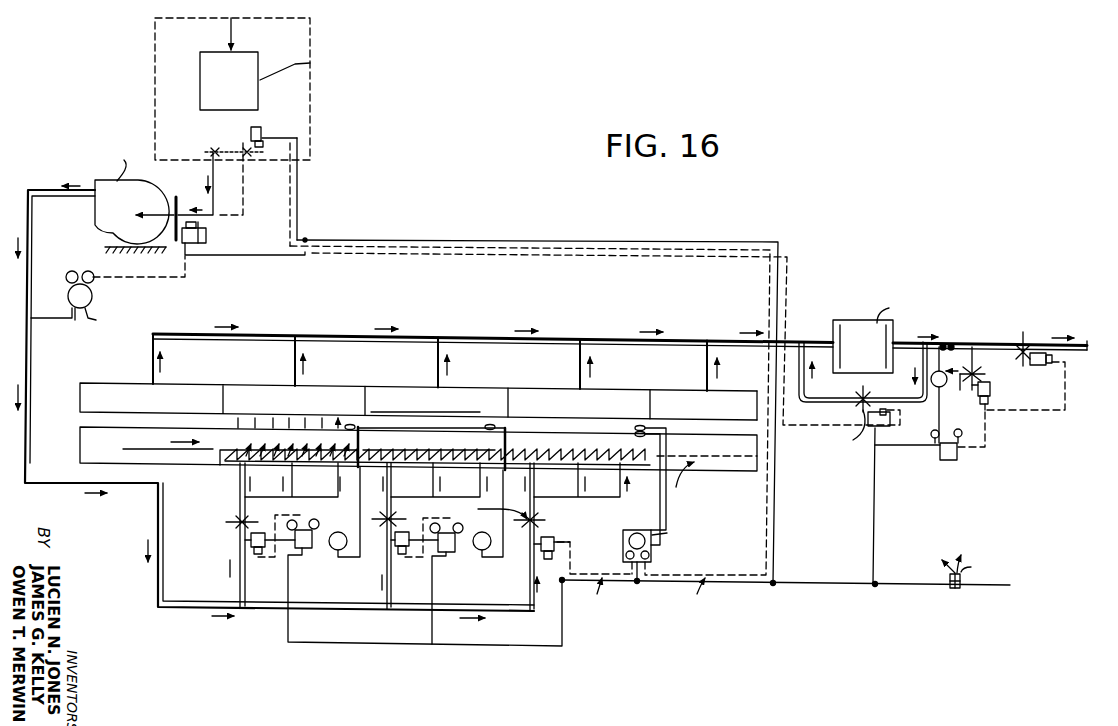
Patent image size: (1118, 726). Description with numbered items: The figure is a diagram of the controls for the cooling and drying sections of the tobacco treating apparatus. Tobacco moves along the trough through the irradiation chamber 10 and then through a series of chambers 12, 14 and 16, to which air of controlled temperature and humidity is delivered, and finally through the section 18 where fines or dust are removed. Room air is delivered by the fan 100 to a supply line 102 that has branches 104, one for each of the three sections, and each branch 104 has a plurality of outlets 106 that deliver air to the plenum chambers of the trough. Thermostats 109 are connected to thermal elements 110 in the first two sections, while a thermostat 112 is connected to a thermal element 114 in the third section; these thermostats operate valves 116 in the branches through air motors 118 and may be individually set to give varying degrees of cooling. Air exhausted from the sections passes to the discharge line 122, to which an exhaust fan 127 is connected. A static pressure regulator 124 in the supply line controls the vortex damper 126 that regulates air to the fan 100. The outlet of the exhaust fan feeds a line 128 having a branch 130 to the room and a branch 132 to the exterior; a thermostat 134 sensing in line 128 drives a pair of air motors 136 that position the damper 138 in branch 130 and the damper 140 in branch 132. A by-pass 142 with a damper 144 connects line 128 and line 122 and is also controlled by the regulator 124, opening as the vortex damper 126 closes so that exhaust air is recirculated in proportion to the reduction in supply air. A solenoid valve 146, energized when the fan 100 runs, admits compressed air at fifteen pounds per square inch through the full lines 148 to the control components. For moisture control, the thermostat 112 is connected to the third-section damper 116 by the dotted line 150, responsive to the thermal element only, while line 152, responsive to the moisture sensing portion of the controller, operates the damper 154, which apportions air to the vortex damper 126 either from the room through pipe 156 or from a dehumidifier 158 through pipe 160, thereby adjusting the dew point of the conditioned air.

The chamber 10 is at (170, 411).
The chamber 12 is at (418, 444).
The chamber 14 is at (421, 488).
The chamber 16 is at (581, 463).
The section 18 is at (713, 456).
The fan 100 is at (110, 203).
The supply line 102 is at (38, 288).
The branches 104 is at (236, 586).
The outlets 106 is at (242, 494).
The thermostats 109 is at (291, 553).
The thermal elements 110 is at (328, 425).
The thermostat 112 is at (632, 530).
The thermal element 114 is at (633, 423).
The valves 116 is at (232, 517).
The air motors 118 is at (250, 541).
The discharge line 122 is at (293, 359).
The static pressure regulator 124 is at (92, 292).
The vortex damper 126 is at (208, 240).
The exhaust fan 127 is at (873, 357).
The line 128 is at (913, 343).
The branch 130 is at (973, 358).
The branch 132 is at (1071, 350).
The thermostat 134 is at (960, 460).
The air motors 136 is at (985, 412).
The damper 138 is at (970, 348).
The damper 140 is at (1023, 336).
The by-pass 142 is at (818, 382).
The damper 144 is at (866, 396).
The solenoid valve 146 is at (954, 588).
The compressed air lines 148 is at (248, 258).
The compressed air line 150 is at (586, 547).
The compressed air line 152 is at (463, 241).
The damper 154 is at (260, 132).
The pipe 156 is at (238, 200).
The dehumidifier 158 is at (244, 92).
The pipe 160 is at (243, 184).